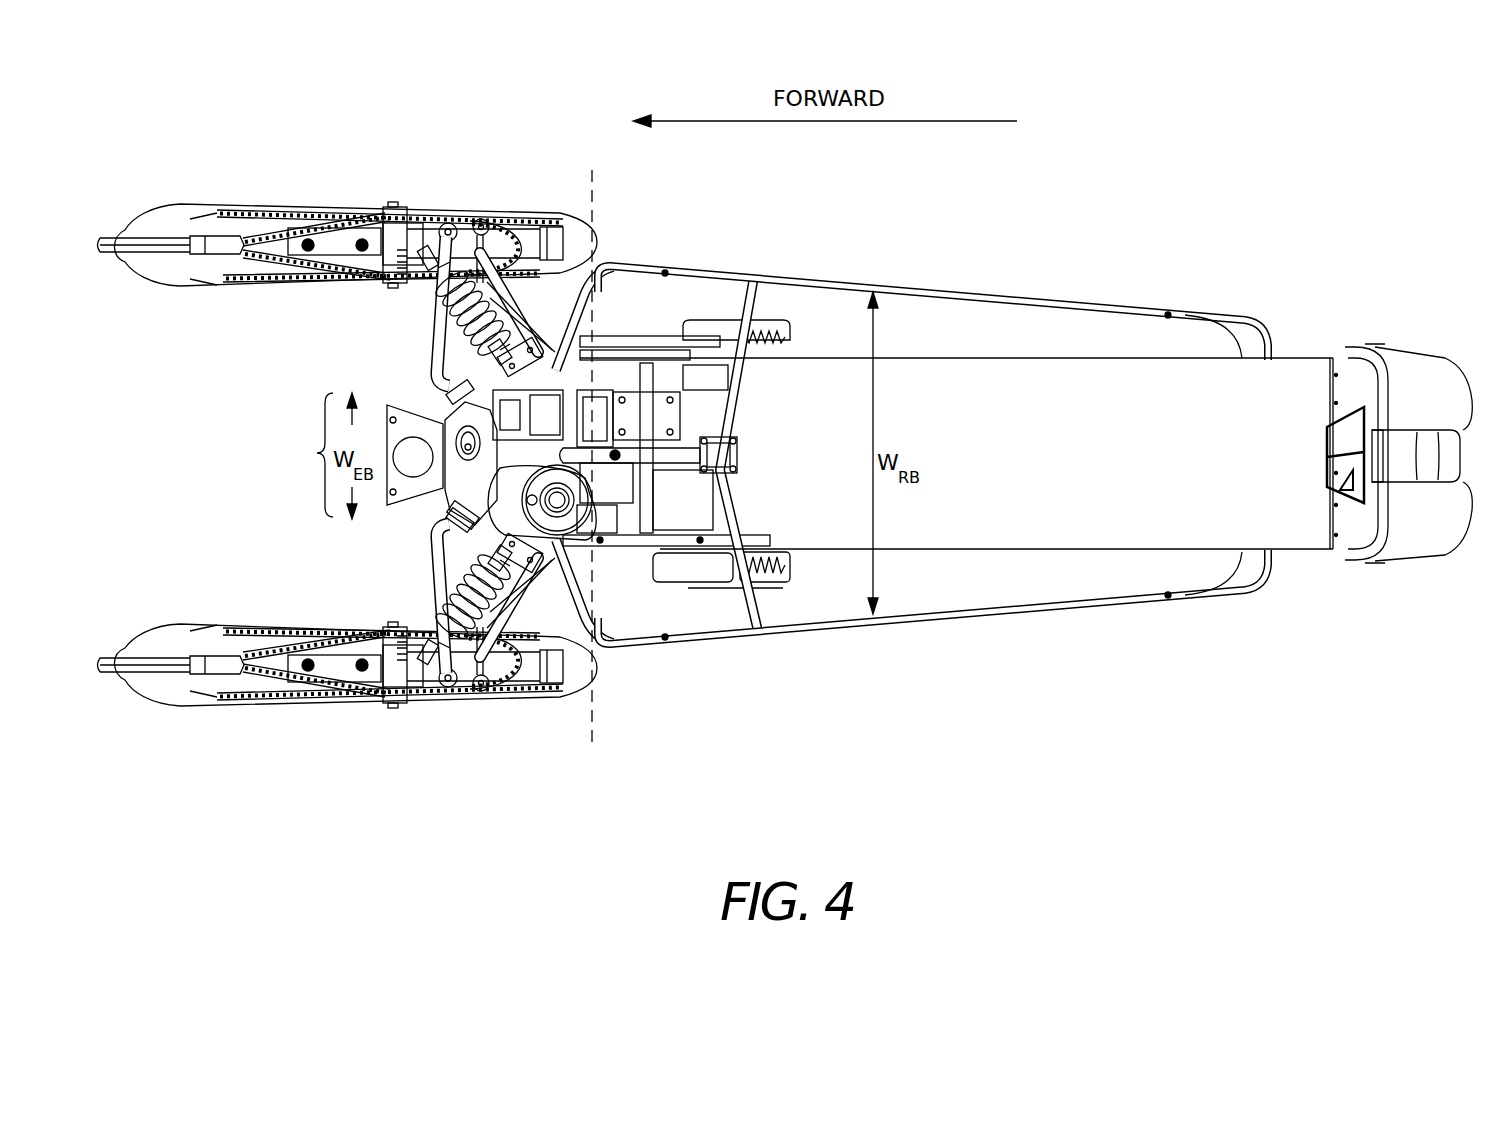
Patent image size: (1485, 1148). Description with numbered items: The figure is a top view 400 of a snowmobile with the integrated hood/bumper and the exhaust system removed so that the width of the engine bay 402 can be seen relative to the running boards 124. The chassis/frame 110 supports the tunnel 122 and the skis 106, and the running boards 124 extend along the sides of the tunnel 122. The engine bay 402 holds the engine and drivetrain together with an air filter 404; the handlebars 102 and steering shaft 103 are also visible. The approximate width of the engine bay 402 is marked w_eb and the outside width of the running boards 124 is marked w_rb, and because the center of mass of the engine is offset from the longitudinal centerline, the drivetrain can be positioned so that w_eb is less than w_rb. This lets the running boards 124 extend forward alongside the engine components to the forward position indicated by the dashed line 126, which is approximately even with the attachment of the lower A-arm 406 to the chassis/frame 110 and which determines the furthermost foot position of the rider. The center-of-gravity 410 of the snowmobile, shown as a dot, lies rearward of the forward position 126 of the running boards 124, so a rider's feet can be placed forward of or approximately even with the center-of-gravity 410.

The top view 400 is at (269, 181).
The skis 106 is at (238, 286).
The lower A-arm 406 is at (446, 301).
The air filter 404 is at (483, 528).
The engine bay 402 is at (316, 453).
The center-of-gravity 410 is at (617, 297).
The dashed line (forward position of running boards) 126 is at (590, 184).
The running boards 124 is at (693, 287).
The chassis/frame 110 is at (1026, 454).
The handlebars 102 is at (728, 418).
The steering shaft 103 is at (730, 478).
The tunnel 122 is at (1091, 480).